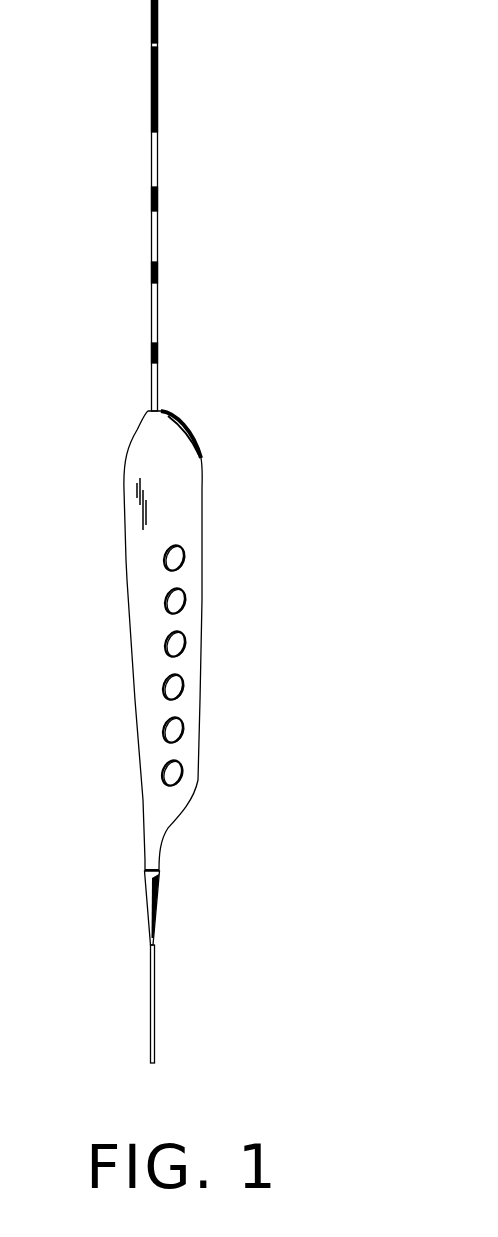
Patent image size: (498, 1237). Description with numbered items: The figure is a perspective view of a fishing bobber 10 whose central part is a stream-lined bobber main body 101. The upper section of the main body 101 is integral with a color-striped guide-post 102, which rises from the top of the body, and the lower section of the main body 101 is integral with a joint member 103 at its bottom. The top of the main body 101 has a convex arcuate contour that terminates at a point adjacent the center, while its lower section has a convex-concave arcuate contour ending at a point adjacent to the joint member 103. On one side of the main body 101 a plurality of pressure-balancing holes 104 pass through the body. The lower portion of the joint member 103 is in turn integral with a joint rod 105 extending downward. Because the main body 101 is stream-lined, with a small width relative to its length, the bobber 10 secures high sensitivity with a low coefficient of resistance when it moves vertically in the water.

The bobber 10 is at (190, 422).
The bobber main body 101 is at (189, 497).
The color-striped guide-post 102 is at (158, 252).
The joint member 103 is at (156, 925).
The pressure-balancing holes 104 is at (186, 549).
The joint rod 105 is at (153, 983).